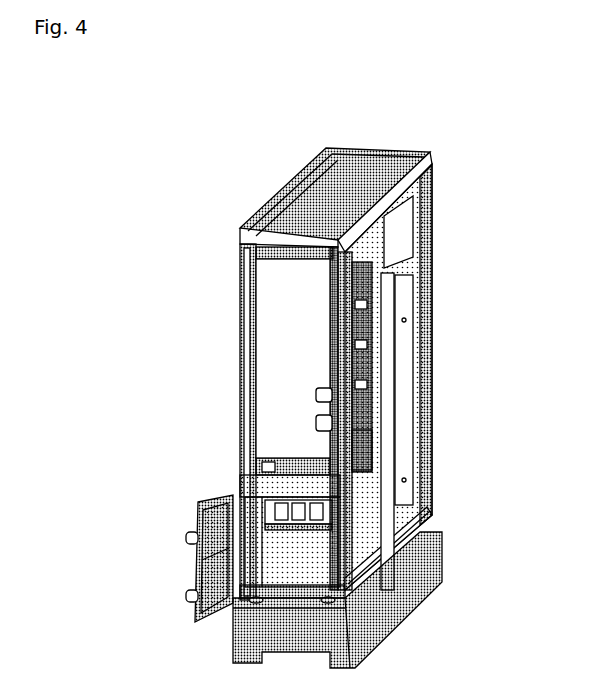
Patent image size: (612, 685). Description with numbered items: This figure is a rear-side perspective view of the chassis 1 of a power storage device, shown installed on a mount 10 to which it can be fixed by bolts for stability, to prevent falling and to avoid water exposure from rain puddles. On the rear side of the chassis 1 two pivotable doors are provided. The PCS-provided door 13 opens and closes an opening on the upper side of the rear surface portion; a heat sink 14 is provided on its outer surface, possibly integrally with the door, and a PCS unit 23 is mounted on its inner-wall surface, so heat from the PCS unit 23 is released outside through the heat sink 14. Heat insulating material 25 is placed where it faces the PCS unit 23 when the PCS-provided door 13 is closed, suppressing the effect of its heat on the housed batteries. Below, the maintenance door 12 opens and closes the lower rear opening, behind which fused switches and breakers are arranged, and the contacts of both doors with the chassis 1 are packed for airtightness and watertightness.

The chassis 1 is at (360, 333).
The mount 10 is at (388, 599).
The maintenance door 12 is at (175, 558).
The PCS-provided door 13 is at (255, 393).
The heat sink 14 is at (459, 393).
The PCS unit 23 is at (253, 353).
The heat insulating material 25 is at (242, 358).